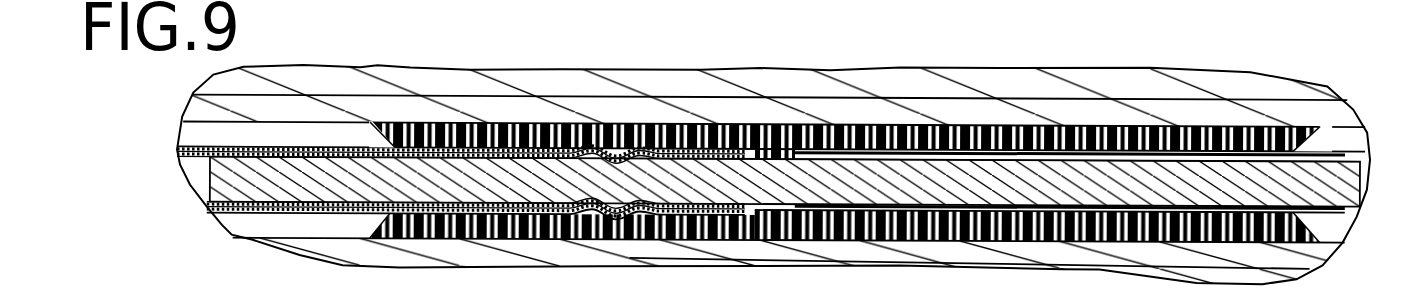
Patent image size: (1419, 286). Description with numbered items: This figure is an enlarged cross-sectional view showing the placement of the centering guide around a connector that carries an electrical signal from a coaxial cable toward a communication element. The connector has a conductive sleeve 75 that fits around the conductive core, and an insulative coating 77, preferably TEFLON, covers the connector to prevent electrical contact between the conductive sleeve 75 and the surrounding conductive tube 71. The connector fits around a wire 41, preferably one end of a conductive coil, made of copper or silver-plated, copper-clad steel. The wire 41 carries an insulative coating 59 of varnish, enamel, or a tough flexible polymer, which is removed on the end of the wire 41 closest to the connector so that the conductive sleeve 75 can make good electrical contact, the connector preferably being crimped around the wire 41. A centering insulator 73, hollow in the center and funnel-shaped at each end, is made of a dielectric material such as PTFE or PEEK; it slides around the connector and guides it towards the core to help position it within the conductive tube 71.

The wire 41 is at (1367, 184).
The insulative coating 59 is at (1377, 152).
The conductive tube 71 is at (1323, 112).
The centering insulator 73 is at (1278, 229).
The conductive sleeve 75 is at (180, 164).
The insulative coating 77 is at (182, 144).